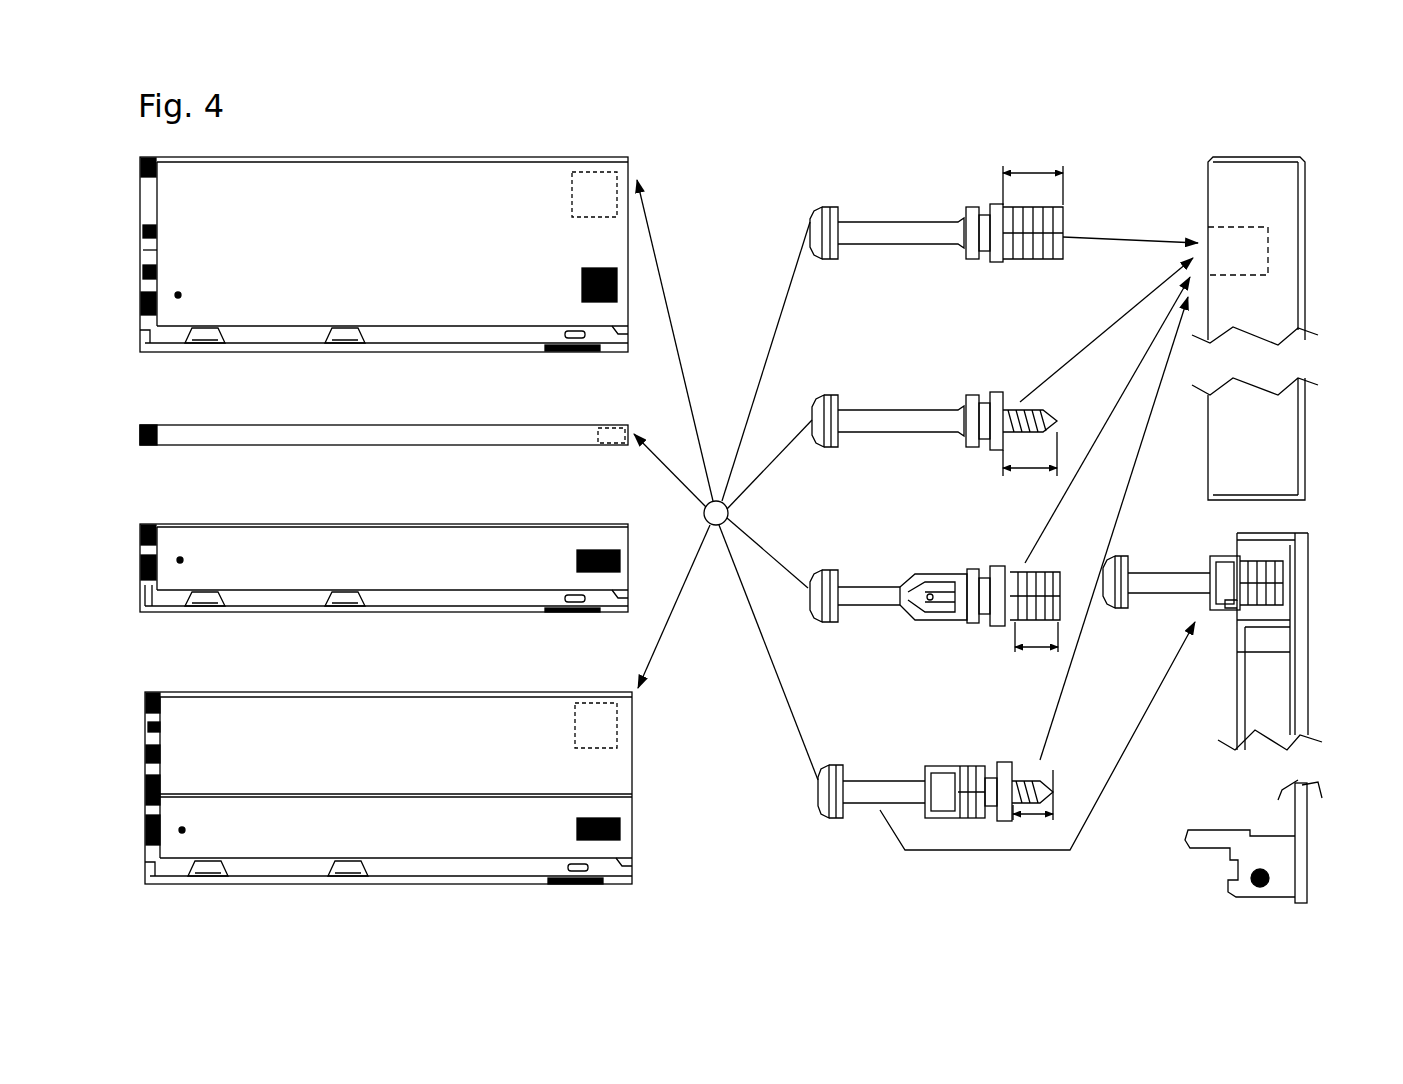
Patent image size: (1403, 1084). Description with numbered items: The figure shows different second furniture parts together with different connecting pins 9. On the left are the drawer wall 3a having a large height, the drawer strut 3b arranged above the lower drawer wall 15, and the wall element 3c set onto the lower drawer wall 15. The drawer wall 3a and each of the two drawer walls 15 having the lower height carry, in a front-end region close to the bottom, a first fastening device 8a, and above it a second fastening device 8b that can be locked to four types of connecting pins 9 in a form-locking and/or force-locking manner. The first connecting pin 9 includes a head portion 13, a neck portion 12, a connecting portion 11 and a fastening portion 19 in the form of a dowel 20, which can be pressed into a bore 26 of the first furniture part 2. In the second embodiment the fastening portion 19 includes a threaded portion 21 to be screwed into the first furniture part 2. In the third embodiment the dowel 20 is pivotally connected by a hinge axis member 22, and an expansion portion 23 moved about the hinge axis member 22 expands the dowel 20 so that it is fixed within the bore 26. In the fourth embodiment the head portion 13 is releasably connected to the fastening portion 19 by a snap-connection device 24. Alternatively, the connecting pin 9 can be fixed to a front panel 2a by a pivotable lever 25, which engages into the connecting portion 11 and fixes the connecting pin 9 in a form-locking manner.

The first furniture part 2 is at (1270, 197).
The front panel 2a is at (1307, 808).
The drawer wall 3a is at (370, 262).
The drawer strut 3b is at (392, 436).
The wall element 3c is at (373, 754).
The first fastening device 8a is at (582, 284).
The second fastening device 8b is at (606, 430).
The connecting pin 9 is at (903, 208).
The connecting portion 11 is at (980, 262).
The neck portion 12 is at (891, 242).
The head portion 13 is at (812, 215).
The lower drawer wall 15 is at (375, 573).
The fastening portion 19 is at (1033, 493).
The dowel 20 is at (1028, 262).
The threaded portion 21 is at (1061, 418).
The hinge axis member 22 is at (943, 624).
The expansion portion 23 is at (1060, 598).
The snap-connection device 24 is at (964, 822).
The pivotable lever 25 is at (1212, 830).
The bore 26 is at (1248, 252).